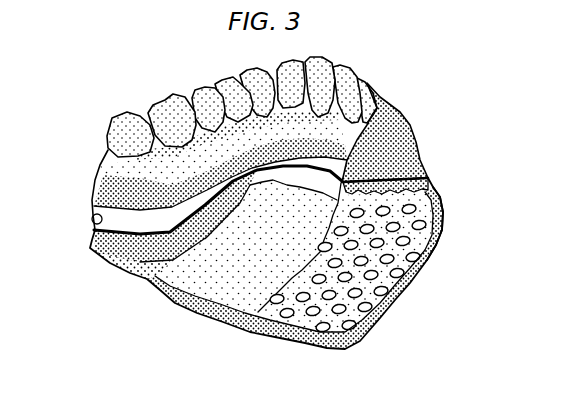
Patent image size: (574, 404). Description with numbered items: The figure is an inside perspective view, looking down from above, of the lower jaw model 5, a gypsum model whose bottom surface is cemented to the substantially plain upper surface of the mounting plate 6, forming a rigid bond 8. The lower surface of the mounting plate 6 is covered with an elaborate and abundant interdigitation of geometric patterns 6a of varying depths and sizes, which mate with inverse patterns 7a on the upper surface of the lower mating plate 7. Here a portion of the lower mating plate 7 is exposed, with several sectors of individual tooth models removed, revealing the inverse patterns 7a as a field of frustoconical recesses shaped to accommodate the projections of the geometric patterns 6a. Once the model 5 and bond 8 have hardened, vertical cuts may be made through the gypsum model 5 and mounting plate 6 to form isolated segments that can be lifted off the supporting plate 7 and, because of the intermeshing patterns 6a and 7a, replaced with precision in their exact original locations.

The lower jaw model 5 is at (123, 183).
The mounting plate 6 is at (95, 236).
The geometric patterns 6a is at (428, 176).
The lower mating plate 7 is at (147, 281).
The inverse patterns 7a is at (437, 247).
The rigid bond 8 is at (95, 217).